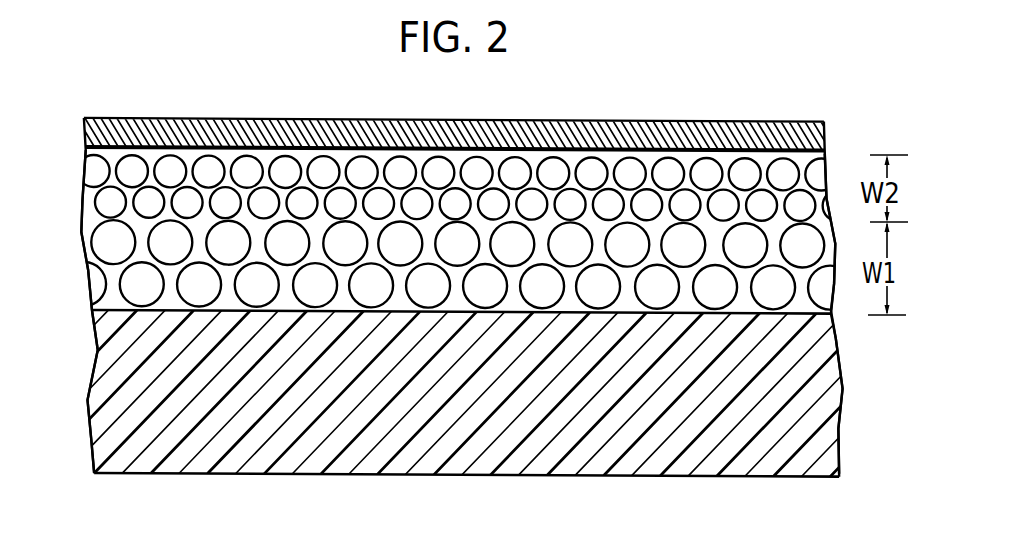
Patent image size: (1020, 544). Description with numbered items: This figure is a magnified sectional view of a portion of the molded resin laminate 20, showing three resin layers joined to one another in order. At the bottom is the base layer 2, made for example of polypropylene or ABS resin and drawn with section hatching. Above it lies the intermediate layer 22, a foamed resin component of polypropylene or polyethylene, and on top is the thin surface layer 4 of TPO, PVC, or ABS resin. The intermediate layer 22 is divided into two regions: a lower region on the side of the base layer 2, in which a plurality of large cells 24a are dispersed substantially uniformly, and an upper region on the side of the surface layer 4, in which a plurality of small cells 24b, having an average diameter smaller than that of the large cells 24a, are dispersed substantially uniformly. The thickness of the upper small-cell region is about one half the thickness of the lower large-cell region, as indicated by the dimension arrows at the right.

The molded resin laminate 20 is at (177, 80).
The surface layer 4 is at (217, 131).
The intermediate layer 22 is at (97, 202).
The small cells 24b is at (333, 167).
The large cells 24a is at (98, 243).
The base layer 2 is at (279, 446).